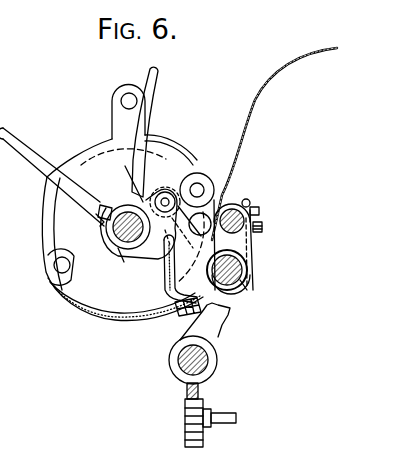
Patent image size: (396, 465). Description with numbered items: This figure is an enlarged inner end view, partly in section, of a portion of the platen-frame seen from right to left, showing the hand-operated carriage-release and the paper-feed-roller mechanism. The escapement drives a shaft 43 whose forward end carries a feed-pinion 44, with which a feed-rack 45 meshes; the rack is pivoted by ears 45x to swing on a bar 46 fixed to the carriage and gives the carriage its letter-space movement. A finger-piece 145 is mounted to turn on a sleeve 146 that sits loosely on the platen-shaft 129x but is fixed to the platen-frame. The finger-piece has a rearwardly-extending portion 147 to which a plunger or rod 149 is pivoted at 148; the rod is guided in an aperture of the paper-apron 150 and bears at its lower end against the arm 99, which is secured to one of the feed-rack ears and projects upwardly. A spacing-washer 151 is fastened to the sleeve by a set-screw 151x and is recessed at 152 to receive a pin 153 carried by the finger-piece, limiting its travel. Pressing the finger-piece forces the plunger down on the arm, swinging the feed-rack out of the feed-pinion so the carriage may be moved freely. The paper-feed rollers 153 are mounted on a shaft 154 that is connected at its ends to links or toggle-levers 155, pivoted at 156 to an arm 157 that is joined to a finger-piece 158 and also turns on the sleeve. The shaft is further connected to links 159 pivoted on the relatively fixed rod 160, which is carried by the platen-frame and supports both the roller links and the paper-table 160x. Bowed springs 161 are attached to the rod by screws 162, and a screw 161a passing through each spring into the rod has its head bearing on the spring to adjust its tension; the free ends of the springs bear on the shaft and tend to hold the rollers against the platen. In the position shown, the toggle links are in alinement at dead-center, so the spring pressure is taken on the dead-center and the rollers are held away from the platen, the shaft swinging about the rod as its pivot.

The shaft 43 is at (227, 418).
The feed-pinion 44 is at (192, 430).
The feed-rack 45 is at (188, 390).
The ears 45x is at (214, 366).
The bar 46 is at (180, 363).
The arm 99 is at (218, 328).
The platen-shaft 129x is at (123, 250).
The finger-piece 145 is at (27, 150).
The sleeve 146 is at (113, 230).
The rearwardly-extending portion 147 is at (161, 191).
The pivot 148 is at (187, 172).
The plunger or rod 149 is at (165, 278).
The paper-apron 150 is at (60, 294).
The spacing-washer 151 is at (112, 243).
The set-screw 151x is at (126, 175).
The recess 152 is at (106, 204).
The pin / paper-feed rollers 153 is at (100, 220).
The shaft 154 is at (248, 268).
The links or toggle-levers 155 is at (206, 300).
The pivot 156 is at (165, 243).
The arm 157 is at (160, 255).
The finger-piece 158 is at (156, 87).
The links 159 is at (254, 238).
The rod 160 is at (233, 212).
The paper-table 160x is at (254, 105).
The bowed springs 161 is at (258, 210).
The screw 161a is at (262, 225).
The screws 162 is at (250, 203).